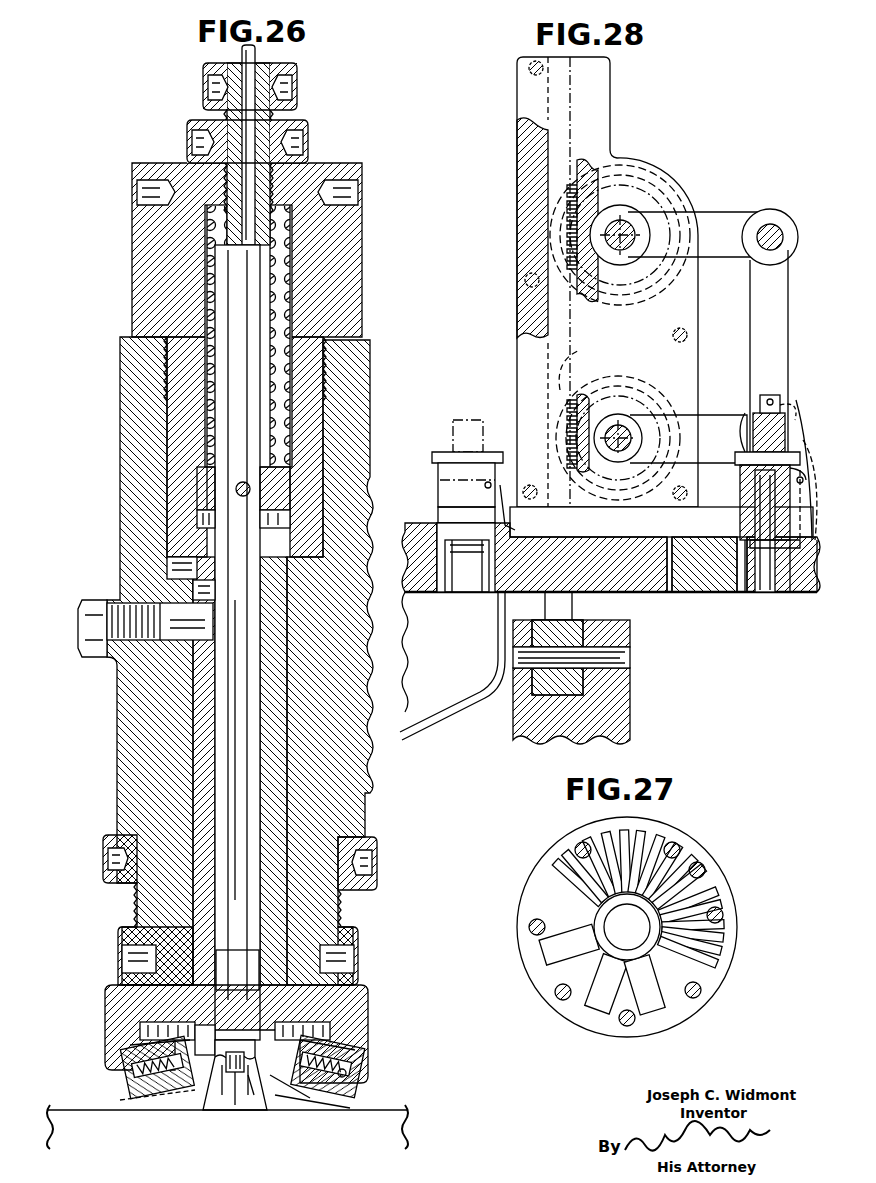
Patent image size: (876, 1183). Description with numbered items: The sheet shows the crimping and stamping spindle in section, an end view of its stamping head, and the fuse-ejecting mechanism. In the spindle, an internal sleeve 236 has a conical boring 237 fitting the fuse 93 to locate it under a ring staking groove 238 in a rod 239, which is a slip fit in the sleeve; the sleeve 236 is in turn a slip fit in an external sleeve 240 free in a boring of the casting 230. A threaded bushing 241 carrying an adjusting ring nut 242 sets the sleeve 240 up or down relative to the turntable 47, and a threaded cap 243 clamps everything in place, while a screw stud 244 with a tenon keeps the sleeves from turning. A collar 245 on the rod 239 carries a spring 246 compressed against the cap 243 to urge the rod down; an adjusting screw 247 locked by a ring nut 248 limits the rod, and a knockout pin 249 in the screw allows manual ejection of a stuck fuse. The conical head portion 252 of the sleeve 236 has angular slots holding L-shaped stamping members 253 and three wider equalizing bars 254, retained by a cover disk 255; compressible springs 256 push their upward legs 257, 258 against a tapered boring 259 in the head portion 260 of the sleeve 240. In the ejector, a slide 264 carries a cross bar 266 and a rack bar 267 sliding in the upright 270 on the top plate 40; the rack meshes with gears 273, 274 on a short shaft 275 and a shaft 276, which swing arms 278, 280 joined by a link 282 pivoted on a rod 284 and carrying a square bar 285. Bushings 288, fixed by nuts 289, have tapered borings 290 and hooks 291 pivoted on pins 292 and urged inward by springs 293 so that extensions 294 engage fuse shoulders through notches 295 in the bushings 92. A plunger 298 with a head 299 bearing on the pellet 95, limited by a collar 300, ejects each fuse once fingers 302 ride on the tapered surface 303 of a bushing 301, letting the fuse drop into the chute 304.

In FIG. 26, the casting 230 is at (120, 395).
In FIG. 26, the threaded cap 243 is at (132, 228).
In FIG. 26, the spring 246 is at (215, 305).
In FIG. 26, the knockout pin 249 is at (242, 49).
In FIG. 26, the adjusting screw 247 is at (203, 72).
In FIG. 26, the ring nut 248 is at (192, 124).
In FIG. 26, the internal sleeve 236 is at (200, 890).
In FIG. 26, the collar 245 is at (205, 487).
In FIG. 26, the screw stud 244 is at (95, 600).
In FIG. 26, the adjusting ring nut 242 is at (103, 848).
In FIG. 26, the external sleeve 240 is at (165, 912).
In FIG. 26, the threaded bushing 241 is at (130, 940).
In FIG. 26, the rod 239 is at (228, 968).
In FIG. 26, the head portion 260 is at (118, 1004).
In FIG. 26, the conical head portion 252 is at (330, 1030).
In FIG. 27, the conical head portion 252 is at (519, 900).
In FIG. 26, the ring staking or crimping groove 238 is at (215, 1045).
In FIG. 26, the cover plate or disk 255 is at (130, 1088).
In FIG. 26, the upward leg 258 is at (140, 1045).
In FIG. 26, the upward leg 257 is at (335, 1055).
In FIG. 26, the tapered boring 259 is at (346, 1074).
In FIG. 26, the conical boring 237 is at (215, 1100).
In FIG. 27, the conical boring 237 is at (596, 922).
In FIG. 26, the fuse 93 is at (232, 1100).
In FIG. 28, the fuse 93 is at (470, 548).
In FIG. 26, the pellet 95 is at (248, 1105).
In FIG. 26, the compressible springs 256 is at (290, 1095).
In FIG. 26, the L-shaped equalizing bars 254 is at (170, 1108).
In FIG. 27, the L-shaped equalizing bars 254 is at (520, 968).
In FIG. 26, the L-shaped stamping member 253 is at (320, 1105).
In FIG. 27, the L-shaped stamping member 253 is at (548, 858).
In FIG. 26, the turntable 47 is at (50, 1125).
In FIG. 28, the turntable 47 is at (680, 594).
In FIG. 28, the upright 270 is at (690, 320).
In FIG. 28, the rack bar 267 is at (517, 160).
In FIG. 28, the gear 273 is at (570, 236).
In FIG. 28, the short shaft 275 is at (630, 262).
In FIG. 28, the arm 278 is at (705, 215).
In FIG. 28, the rod 284 is at (770, 224).
In FIG. 28, the link 282 is at (757, 291).
In FIG. 28, the shaft 276 is at (625, 420).
In FIG. 28, the gear 274 is at (588, 344).
In FIG. 28, the arm 280 is at (680, 415).
In FIG. 28, the top plate 40 is at (625, 560).
In FIG. 28, the bushing 288 is at (445, 455).
In FIG. 28, the tapered surface 303 is at (440, 520).
In FIG. 28, the bushing 301 is at (437, 545).
In FIG. 28, the fuse-ejecting hook 291 is at (505, 488).
In FIG. 28, the nut 289 is at (768, 400).
In FIG. 28, the ejector plunger 298 is at (780, 410).
In FIG. 28, the collar 300 is at (788, 420).
In FIG. 28, the square bar 285 is at (752, 430).
In FIG. 28, the compressible spring 293 is at (740, 465).
In FIG. 28, the tapered boring 290 is at (745, 512).
In FIG. 28, the head 299 is at (740, 496).
In FIG. 28, the pin 292 is at (806, 470).
In FIG. 28, the bushing 92 is at (745, 594).
In FIG. 28, the extension 294 is at (795, 594).
In FIG. 28, the notch 295 is at (765, 596).
In FIG. 28, the finger 302 is at (818, 596).
In FIG. 28, the slide 264 is at (625, 718).
In FIG. 28, the cross bar 266 is at (580, 632).
In FIG. 28, the chute 304 is at (430, 722).